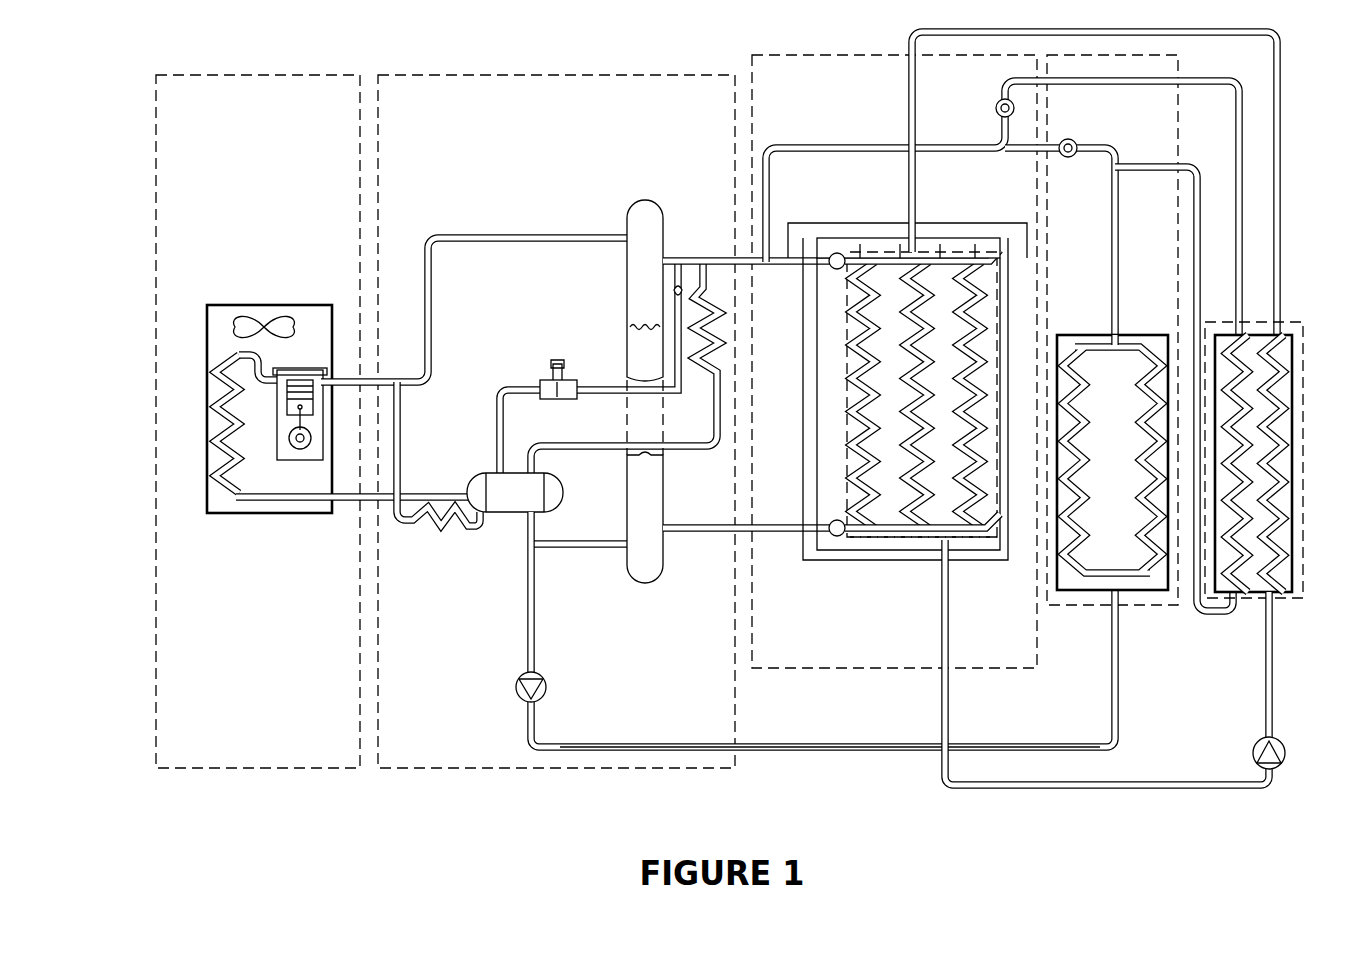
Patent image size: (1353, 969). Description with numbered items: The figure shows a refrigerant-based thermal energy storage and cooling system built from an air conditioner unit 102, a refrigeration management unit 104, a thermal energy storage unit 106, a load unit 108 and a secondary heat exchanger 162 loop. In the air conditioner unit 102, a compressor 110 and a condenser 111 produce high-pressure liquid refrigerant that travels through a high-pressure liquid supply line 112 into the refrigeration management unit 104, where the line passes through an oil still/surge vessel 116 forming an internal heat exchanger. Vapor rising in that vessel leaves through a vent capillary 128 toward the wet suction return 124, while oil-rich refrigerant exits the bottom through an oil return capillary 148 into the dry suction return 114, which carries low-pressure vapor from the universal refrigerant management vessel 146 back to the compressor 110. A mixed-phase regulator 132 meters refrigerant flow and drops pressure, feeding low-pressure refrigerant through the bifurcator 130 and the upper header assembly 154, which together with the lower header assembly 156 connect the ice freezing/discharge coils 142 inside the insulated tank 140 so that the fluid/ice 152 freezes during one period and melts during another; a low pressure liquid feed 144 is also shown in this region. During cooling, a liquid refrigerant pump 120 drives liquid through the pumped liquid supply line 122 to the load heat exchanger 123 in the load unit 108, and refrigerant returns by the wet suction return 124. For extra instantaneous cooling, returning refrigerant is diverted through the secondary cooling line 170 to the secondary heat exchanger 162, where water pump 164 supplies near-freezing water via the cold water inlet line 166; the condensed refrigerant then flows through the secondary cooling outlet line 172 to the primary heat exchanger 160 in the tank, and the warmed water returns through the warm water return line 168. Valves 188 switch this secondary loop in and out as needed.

The air conditioner unit 102 is at (298, 770).
The refrigeration management unit 104 is at (470, 770).
The thermal energy storage unit 106 is at (870, 670).
The load unit 108 is at (1102, 606).
The compressor 110 is at (302, 368).
The condenser 111 is at (218, 494).
The high-pressure liquid supply line 112 is at (345, 502).
The dry suction return 114 is at (345, 378).
The oil still/surge vessel 116 is at (562, 498).
The liquid refrigerant pump 120 is at (515, 687).
The pumped liquid supply line 122 is at (730, 745).
The load heat exchanger 123 is at (1115, 360).
The wet suction return 124 is at (1122, 196).
The vent capillary 128 is at (700, 290).
The bifurcator 130 is at (668, 258).
The mixed-phase regulator 132 is at (541, 382).
The insulated tank 140 is at (805, 283).
The ice freezing/discharge coils 142 is at (965, 522).
The low pressure liquid feed 144 is at (603, 386).
The universal refrigerant management vessel 146 is at (630, 215).
The oil return capillary 148 is at (425, 532).
The fluid/ice 152 is at (1018, 222).
The upper header assembly 154 is at (850, 255).
The lower header assembly 156 is at (850, 545).
The primary heat exchanger 160 is at (915, 545).
The secondary heat exchanger 162 is at (1250, 605).
The water pump 164 is at (1253, 765).
The cold water inlet line 166 is at (1107, 681).
The warm water return line 168 is at (905, 40).
The secondary cooling line 170 is at (1175, 166).
The secondary cooling outlet line 172 is at (1002, 128).
The valves 188 is at (1014, 110).